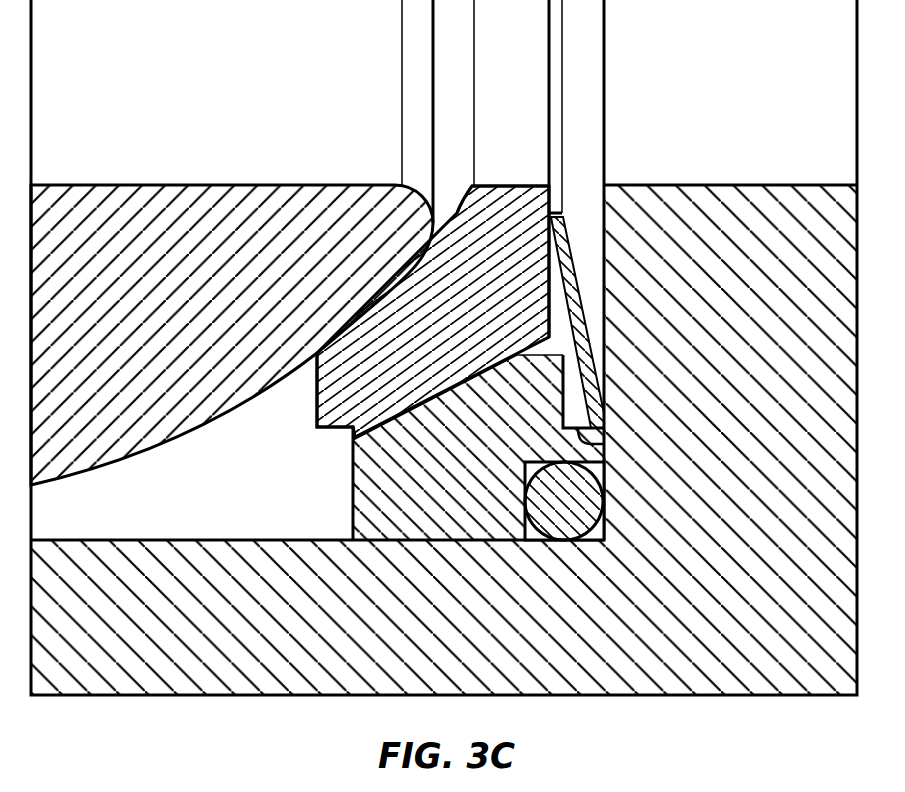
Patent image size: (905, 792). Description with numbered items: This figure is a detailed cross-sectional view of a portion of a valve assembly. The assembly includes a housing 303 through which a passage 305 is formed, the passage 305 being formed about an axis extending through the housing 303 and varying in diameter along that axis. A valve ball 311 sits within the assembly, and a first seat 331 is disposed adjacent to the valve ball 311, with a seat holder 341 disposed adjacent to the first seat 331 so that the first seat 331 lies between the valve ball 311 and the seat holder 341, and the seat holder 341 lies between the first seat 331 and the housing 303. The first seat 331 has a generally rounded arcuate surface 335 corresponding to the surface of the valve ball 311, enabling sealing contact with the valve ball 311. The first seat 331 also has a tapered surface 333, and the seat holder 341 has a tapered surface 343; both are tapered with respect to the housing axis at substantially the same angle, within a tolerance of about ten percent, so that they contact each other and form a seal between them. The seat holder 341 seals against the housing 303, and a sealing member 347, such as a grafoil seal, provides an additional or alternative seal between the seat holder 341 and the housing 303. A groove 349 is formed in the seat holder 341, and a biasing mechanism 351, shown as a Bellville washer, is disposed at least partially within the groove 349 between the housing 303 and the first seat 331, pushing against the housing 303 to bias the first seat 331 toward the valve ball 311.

The housing 303 is at (770, 381).
The passage 305 is at (216, 540).
The valve ball 311 is at (215, 311).
The first seat 331 is at (477, 336).
The tapered surface 333 is at (430, 392).
The rounded arcuate surface 335 is at (453, 221).
The seat holder 341 is at (477, 481).
The tapered surface 343 is at (443, 398).
The sealing member 347 is at (590, 516).
The groove 349 is at (600, 443).
The biasing mechanism 351 is at (582, 320).